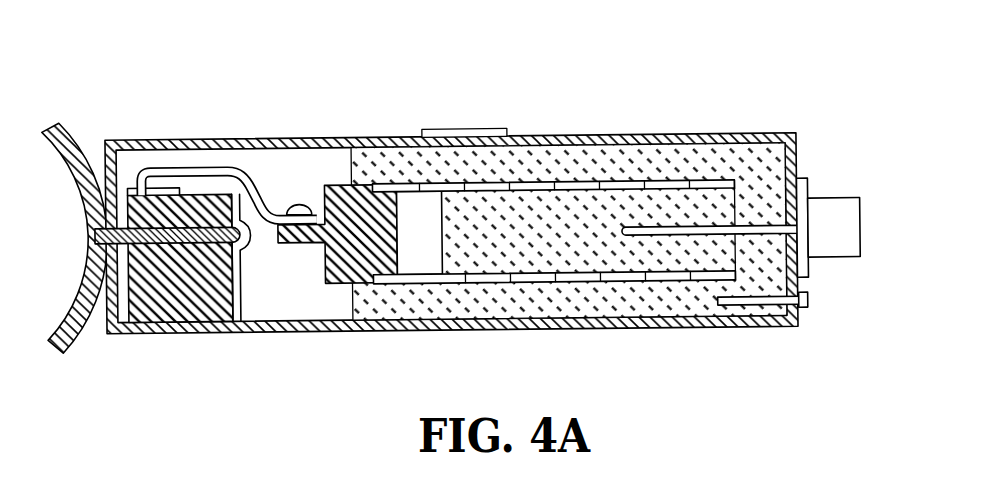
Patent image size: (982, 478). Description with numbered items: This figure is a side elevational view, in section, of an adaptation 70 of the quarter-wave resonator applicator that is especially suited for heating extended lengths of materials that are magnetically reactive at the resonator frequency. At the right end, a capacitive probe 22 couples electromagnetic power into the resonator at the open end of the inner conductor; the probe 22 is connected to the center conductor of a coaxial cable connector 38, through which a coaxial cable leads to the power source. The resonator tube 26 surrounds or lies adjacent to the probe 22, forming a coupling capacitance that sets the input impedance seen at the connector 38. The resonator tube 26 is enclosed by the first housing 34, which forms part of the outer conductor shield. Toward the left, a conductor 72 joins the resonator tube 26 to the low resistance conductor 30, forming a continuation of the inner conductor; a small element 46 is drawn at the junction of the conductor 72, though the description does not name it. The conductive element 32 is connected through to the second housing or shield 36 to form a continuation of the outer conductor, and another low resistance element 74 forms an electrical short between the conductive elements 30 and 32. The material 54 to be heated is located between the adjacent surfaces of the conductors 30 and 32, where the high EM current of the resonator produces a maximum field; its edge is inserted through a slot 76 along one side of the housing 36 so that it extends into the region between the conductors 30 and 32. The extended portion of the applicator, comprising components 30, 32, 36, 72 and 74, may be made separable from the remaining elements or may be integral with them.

The adaptation of the quarter-wave resonator 70 is at (439, 197).
The second housing 36 is at (237, 136).
The first housing 34 is at (554, 135).
The low resistance conductor 30 is at (195, 187).
The conductor 72 is at (265, 184).
The solder joint 46 is at (303, 203).
The resonator tube 26 is at (643, 185).
The capacitive probe 22 is at (692, 223).
The coaxial cable connector 38 is at (835, 202).
The slot 76 is at (83, 227).
The material to be heated 54 is at (170, 242).
The low resistance conductor 32 is at (217, 310).
The low resistance element 74 is at (247, 238).